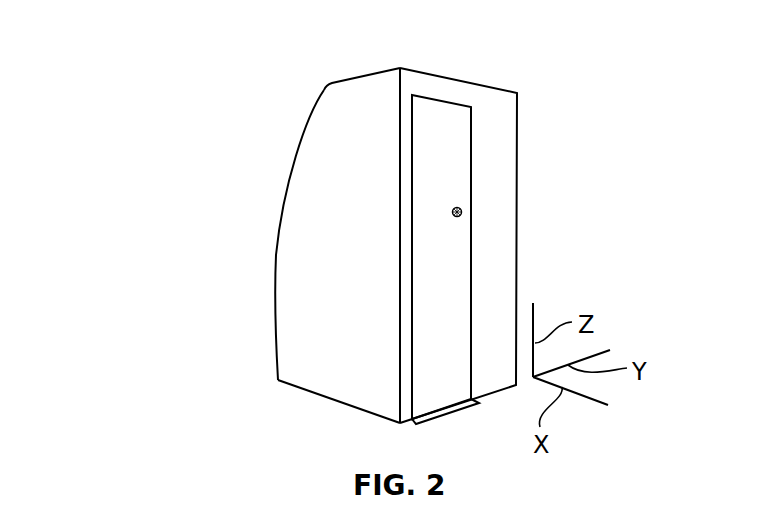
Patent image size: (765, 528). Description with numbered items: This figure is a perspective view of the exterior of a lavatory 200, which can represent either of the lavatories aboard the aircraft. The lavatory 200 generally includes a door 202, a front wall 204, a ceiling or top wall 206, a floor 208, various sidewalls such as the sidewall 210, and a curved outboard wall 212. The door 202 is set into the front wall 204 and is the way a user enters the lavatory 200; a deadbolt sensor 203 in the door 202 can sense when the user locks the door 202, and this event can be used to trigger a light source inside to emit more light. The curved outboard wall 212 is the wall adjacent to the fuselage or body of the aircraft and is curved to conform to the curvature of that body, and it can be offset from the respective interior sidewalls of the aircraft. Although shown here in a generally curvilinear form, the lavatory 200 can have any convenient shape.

The lavatory 200 is at (184, 111).
The door 202 is at (440, 102).
The deadbolt sensor 203 is at (462, 215).
The front wall 204 is at (497, 180).
The ceiling or top wall 206 is at (347, 82).
The floor 208 is at (307, 390).
The sidewall 210 is at (312, 168).
The curved outboard wall 212 is at (277, 252).